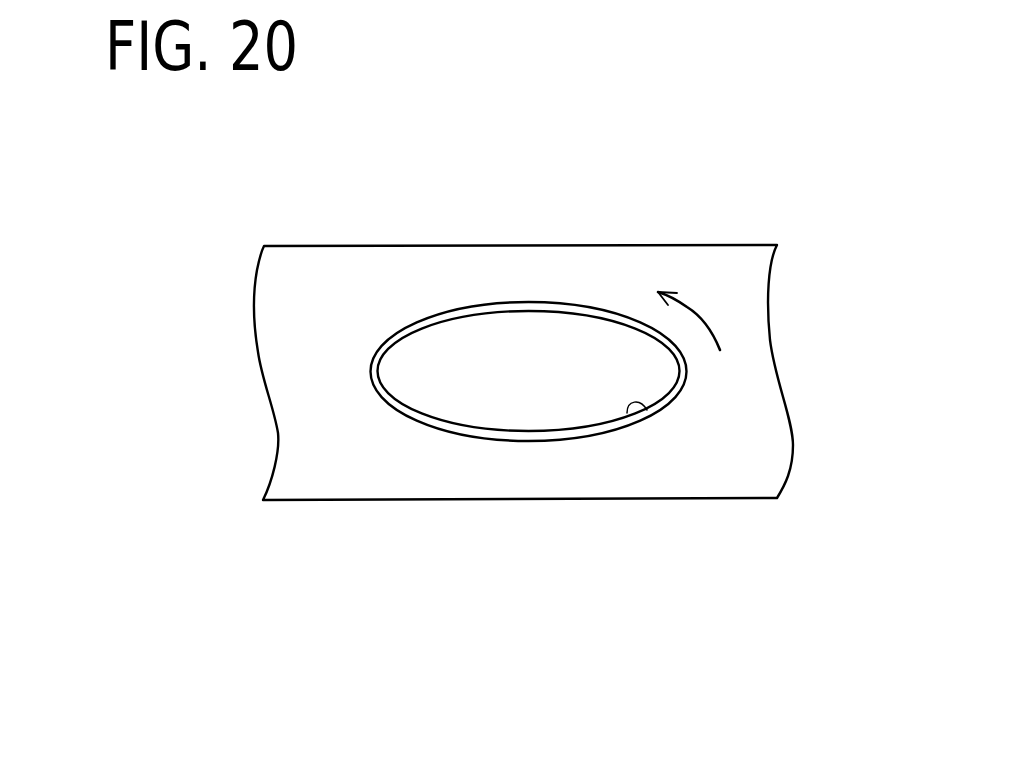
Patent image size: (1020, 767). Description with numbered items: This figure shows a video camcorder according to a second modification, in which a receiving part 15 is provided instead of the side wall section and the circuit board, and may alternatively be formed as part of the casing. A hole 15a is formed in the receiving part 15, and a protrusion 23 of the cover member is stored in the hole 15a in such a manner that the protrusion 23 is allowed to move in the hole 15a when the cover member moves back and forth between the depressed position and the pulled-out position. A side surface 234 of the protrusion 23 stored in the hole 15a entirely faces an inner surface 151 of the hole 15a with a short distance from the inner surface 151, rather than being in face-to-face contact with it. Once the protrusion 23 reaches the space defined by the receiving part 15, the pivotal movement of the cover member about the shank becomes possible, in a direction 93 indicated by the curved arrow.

The receiving part 15 is at (717, 263).
The hole 15a is at (470, 305).
The protrusion 23 is at (575, 340).
The side surface 234 is at (603, 317).
The direction 93 is at (701, 318).
The inner surface 151 is at (627, 413).